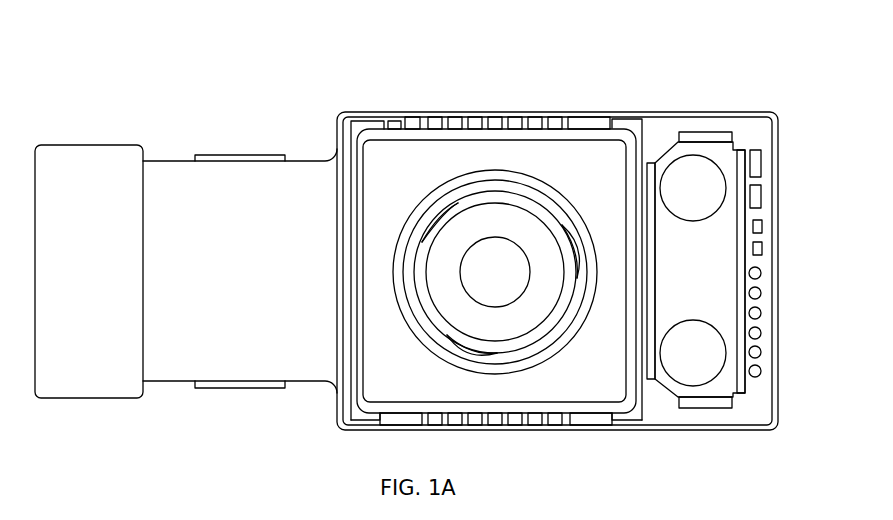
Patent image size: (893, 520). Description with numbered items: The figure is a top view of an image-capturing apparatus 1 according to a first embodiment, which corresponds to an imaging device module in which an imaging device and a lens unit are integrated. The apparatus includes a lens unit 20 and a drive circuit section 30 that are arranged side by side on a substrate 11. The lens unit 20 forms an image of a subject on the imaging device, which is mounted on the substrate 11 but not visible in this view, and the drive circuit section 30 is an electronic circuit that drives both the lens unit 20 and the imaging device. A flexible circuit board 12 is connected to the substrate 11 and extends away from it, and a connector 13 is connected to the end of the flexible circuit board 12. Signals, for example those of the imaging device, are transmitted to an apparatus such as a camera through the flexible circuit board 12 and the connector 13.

The image-capturing apparatus 1 is at (756, 60).
The substrate 11 is at (660, 111).
The flexible circuit board 12 is at (172, 161).
The connector 13 is at (83, 143).
The lens unit 20 is at (593, 127).
The drive circuit section 30 is at (742, 134).